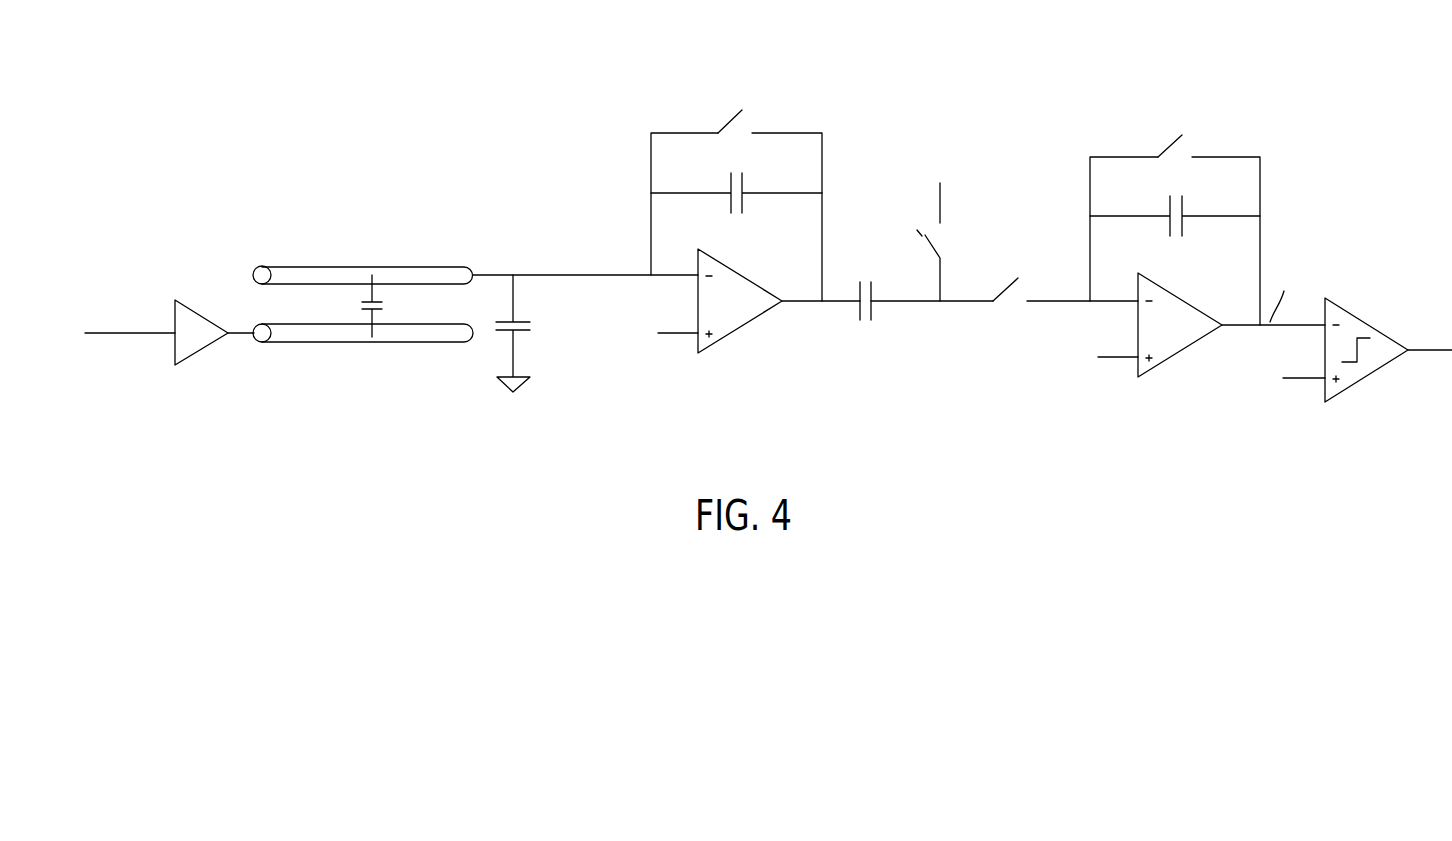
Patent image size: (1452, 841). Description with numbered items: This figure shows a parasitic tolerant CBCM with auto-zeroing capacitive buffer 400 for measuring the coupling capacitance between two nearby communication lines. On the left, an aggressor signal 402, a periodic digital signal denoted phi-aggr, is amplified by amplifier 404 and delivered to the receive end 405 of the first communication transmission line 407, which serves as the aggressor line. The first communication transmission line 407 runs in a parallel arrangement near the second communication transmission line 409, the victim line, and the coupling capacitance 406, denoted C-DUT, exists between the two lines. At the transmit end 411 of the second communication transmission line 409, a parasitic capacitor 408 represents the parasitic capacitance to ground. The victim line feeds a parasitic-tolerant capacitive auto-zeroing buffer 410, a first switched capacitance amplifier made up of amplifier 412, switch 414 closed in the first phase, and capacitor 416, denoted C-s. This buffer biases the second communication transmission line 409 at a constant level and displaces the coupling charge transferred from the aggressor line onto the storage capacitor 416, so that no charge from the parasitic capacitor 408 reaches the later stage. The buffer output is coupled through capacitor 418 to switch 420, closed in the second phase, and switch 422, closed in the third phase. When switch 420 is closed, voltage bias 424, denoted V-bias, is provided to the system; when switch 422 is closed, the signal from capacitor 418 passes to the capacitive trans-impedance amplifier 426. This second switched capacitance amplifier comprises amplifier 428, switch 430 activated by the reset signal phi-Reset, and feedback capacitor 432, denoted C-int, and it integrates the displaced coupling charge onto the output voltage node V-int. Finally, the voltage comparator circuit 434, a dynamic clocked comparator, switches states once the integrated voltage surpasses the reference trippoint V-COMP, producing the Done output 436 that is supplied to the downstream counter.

The parasitic tolerant CBCM with auto-zeroing capacitive buffer 400 is at (392, 108).
The aggressor signal 402 is at (108, 333).
The amplifier 404 is at (210, 345).
The receive end 405 is at (255, 326).
The coupling capacitance 406 is at (378, 300).
The first communication transmission line 407 is at (440, 343).
The parasitic capacitor 408 is at (503, 320).
The second communication transmission line 409 is at (258, 266).
The parasitic-tolerant capacitive auto-zeroing buffer 410 is at (630, 122).
The transmit end 411 is at (440, 267).
The amplifier 412 is at (722, 338).
The switch 414 is at (728, 122).
The capacitor 416 is at (750, 245).
The capacitor 418 is at (860, 318).
The switch 420 is at (1003, 300).
The switch 422 is at (925, 235).
The voltage bias 424 is at (965, 155).
The capacitive trans-impedance amplifier 426 is at (1070, 140).
The amplifier 428 is at (1168, 362).
The switch 430 is at (1165, 150).
The feedback capacitor 432 is at (1190, 268).
The voltage comparator circuit 434 is at (1385, 368).
The output 436 is at (1435, 352).